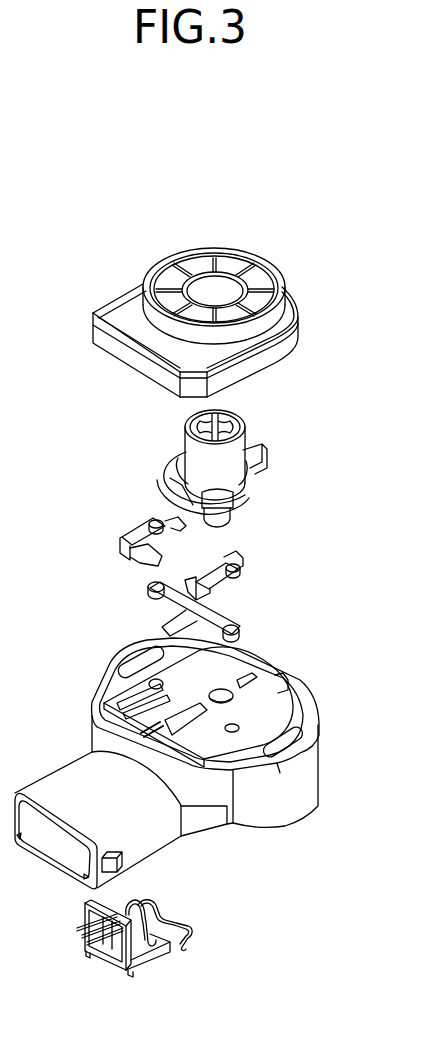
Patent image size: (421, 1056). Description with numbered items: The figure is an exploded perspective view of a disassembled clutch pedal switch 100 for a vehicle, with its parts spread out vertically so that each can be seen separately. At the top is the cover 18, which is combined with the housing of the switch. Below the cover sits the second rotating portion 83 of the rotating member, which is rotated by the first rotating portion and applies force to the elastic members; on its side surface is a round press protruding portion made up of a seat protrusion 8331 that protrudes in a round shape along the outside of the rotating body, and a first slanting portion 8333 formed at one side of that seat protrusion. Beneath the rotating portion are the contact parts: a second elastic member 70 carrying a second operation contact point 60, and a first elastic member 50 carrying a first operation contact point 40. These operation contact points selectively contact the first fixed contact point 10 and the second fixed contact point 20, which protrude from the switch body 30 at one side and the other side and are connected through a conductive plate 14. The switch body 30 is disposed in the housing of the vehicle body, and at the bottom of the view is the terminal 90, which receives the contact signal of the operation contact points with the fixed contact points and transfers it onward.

The clutch pedal switch 100 is at (323, 232).
The cover 18 is at (157, 251).
The second rotating portion 83 is at (257, 433).
The seat protrusion 8331 is at (168, 461).
The first slanting portion 8333 is at (195, 504).
The second elastic member 70 is at (123, 534).
The second operation contact point 60 is at (159, 533).
The first operation contact point 40 is at (224, 578).
The first elastic member 50 is at (228, 584).
The conductive plate 14 is at (165, 603).
The second fixed contact point 20 is at (149, 586).
The first fixed contact point 10 is at (240, 629).
The switch body 30 is at (263, 698).
The terminal 90 is at (88, 969).